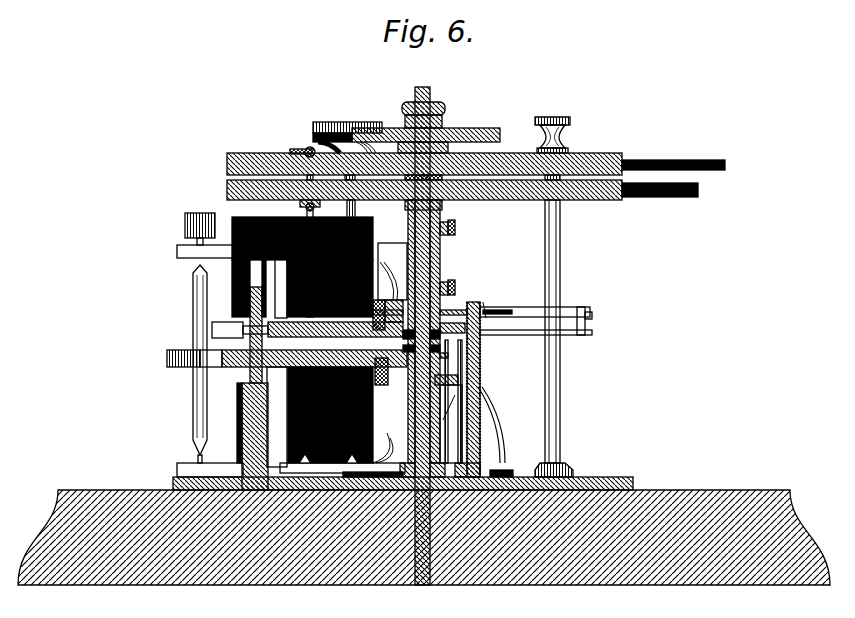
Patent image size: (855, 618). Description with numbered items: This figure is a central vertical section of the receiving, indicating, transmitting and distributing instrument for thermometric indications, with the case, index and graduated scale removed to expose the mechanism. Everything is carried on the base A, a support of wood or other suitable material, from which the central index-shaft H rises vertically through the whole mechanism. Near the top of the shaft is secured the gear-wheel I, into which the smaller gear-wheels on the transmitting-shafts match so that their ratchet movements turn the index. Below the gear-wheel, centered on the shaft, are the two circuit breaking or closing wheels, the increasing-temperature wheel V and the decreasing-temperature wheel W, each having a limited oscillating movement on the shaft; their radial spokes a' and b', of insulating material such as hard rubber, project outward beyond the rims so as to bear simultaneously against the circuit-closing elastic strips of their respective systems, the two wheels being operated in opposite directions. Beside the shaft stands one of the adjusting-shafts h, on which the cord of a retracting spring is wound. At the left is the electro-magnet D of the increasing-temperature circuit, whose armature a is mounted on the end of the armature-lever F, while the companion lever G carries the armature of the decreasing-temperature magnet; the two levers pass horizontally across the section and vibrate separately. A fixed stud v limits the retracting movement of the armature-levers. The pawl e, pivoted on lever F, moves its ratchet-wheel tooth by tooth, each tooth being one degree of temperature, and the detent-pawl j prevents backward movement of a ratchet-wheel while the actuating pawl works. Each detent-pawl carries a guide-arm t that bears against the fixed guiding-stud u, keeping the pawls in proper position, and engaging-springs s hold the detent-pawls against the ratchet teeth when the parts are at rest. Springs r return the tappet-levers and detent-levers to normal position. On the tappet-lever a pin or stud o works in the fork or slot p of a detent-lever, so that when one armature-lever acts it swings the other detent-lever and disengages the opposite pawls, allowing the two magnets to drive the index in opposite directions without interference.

The base A is at (424, 522).
The index-shaft H is at (426, 328).
The gear-wheel I is at (406, 129).
The increasing-temperature circuit breaking or closing wheel V is at (424, 146).
The decreasing-temperature circuit breaking or closing wheel W is at (409, 199).
The radial spokes of wheel V a' is at (673, 155).
The radial spokes of wheel W b' is at (671, 190).
The adjusting-shaft h is at (356, 210).
The electro-magnet D is at (311, 338).
The armature a is at (210, 371).
The fixed stud v is at (255, 388).
The armature-lever G is at (338, 330).
The armature-lever F is at (276, 357).
The spring r is at (365, 344).
The pawl e is at (388, 348).
The fixed guiding-stud u is at (467, 378).
The guide-arm t is at (462, 305).
The detent-pawl j is at (486, 303).
The engaging-spring s is at (536, 313).
The pin or stud o is at (501, 406).
The fork or slot p is at (448, 401).